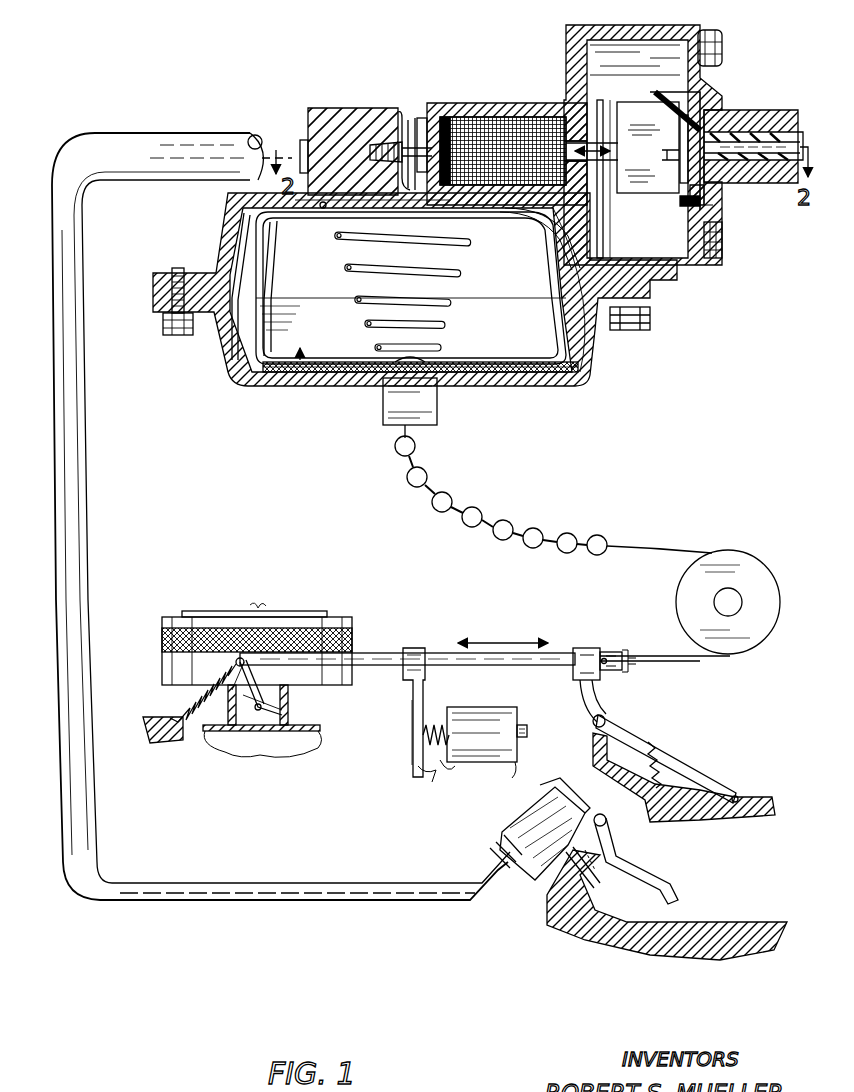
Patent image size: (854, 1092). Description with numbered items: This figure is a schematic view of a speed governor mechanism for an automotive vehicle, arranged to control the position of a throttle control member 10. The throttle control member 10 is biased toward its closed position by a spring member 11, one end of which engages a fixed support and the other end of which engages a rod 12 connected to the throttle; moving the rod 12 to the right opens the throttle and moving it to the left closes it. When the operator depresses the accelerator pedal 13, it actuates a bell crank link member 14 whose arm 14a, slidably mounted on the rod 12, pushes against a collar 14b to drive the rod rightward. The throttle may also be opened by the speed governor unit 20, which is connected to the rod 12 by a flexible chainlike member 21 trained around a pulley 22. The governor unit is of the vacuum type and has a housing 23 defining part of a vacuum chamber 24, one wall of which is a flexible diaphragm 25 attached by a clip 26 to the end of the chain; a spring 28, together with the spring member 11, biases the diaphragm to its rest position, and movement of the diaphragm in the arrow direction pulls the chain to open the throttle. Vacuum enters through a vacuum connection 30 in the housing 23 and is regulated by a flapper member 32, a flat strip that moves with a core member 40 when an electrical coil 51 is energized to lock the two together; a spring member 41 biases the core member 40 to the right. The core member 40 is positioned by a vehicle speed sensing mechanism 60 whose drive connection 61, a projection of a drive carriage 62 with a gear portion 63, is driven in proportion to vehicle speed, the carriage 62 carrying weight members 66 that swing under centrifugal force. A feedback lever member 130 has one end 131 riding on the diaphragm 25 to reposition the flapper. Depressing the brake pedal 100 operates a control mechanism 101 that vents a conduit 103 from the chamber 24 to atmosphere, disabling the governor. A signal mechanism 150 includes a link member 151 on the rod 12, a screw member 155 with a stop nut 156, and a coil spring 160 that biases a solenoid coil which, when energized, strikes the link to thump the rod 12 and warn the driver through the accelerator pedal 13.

The throttle control member 10 is at (286, 706).
The spring member 11 is at (182, 700).
The rod 12 is at (366, 652).
The accelerator pedal 13 is at (690, 758).
The bell crank link member 14 is at (630, 726).
The arm 14a is at (596, 695).
The collar 14b is at (590, 648).
The speed governor unit 20 is at (586, 390).
The flexible chainlike member 21 is at (539, 528).
The pulley 22 is at (745, 560).
The housing 23 is at (240, 255).
The vacuum chamber 24 is at (262, 232).
The flexible diaphragm 25 is at (240, 345).
The clip 26 is at (437, 406).
The spring 28 is at (344, 266).
The vacuum connection 30 is at (304, 139).
The flapper member 32 is at (430, 130).
The core member 40 is at (596, 130).
The spring member 41 is at (386, 143).
The electrical coil 51 is at (507, 117).
The vehicle speed sensing mechanism 60 is at (735, 196).
The drive connection 61 is at (776, 126).
The drive carriage 62 is at (668, 212).
The gear portion 63 is at (710, 233).
The weight members 66 is at (640, 184).
The brake pedal 100 is at (656, 881).
The control mechanism 101 is at (506, 812).
The conduit 103 is at (443, 896).
The lever member 130 is at (500, 272).
The end of lever member 131 is at (456, 364).
The signal mechanism 150 is at (402, 768).
The link member 151 is at (410, 706).
The screw member 155 is at (519, 737).
The nut 156 is at (522, 728).
The coil spring 160 is at (428, 725).